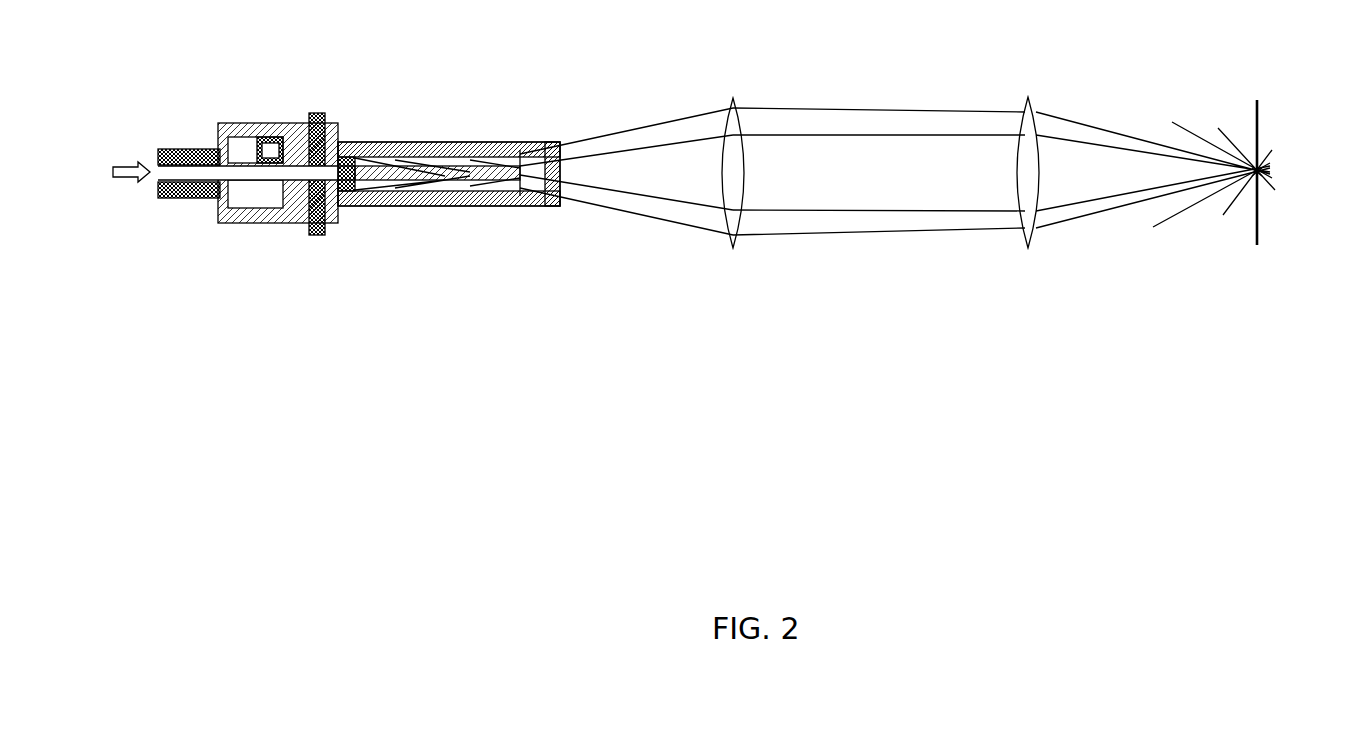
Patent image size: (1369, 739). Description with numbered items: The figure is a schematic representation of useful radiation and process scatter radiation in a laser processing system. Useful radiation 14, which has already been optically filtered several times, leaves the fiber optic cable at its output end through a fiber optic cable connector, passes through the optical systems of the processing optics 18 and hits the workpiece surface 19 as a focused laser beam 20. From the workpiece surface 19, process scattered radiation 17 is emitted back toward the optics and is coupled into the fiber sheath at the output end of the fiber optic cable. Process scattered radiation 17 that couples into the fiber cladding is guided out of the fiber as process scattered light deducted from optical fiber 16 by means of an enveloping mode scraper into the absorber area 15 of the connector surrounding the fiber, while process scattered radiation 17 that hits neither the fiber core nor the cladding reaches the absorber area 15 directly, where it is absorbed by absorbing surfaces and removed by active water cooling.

The useful radiation 14 is at (120, 168).
The absorber area 15 is at (363, 158).
The process scattered light deducted from optical fiber 16 is at (446, 158).
The process scattered radiation 17 is at (622, 133).
The optical systems of the processing optics 18 is at (737, 100).
The workpiece surface 19 is at (1259, 216).
The focused laser beam 20 is at (1275, 172).